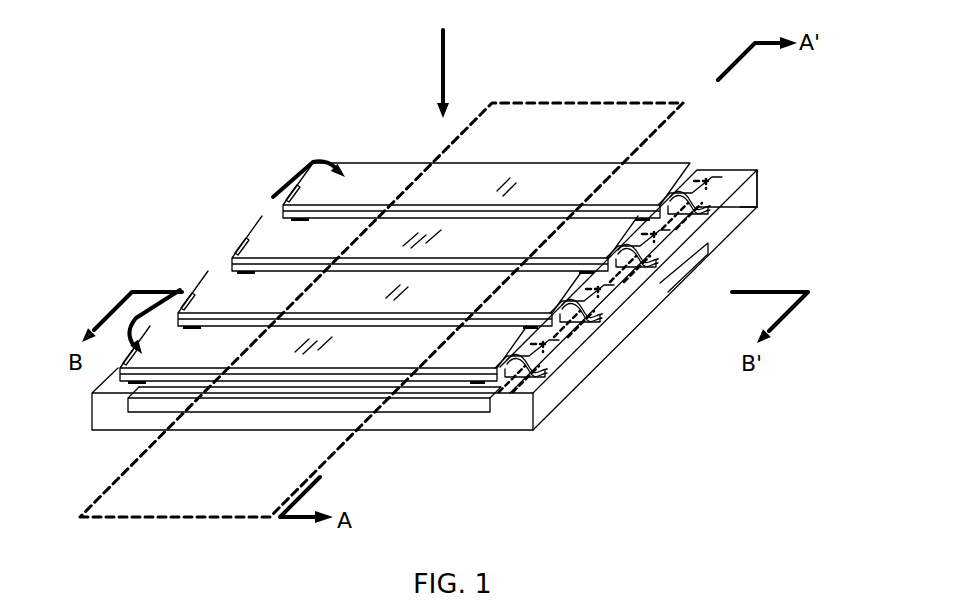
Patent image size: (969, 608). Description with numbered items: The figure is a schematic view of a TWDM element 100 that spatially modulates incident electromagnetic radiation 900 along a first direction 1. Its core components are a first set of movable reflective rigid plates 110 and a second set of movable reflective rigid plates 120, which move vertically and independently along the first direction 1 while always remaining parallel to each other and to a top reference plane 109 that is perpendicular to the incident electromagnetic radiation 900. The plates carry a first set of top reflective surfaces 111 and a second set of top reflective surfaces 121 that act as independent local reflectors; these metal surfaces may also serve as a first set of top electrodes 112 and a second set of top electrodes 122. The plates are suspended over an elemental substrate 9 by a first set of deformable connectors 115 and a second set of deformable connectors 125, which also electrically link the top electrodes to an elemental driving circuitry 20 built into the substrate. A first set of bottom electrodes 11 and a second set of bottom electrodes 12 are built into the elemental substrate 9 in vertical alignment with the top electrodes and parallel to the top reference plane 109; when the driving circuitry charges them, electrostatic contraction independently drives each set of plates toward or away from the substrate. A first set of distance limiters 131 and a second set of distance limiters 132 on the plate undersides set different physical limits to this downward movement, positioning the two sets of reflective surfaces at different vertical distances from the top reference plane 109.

The TWDM element 100 is at (253, 60).
The incident electromagnetic radiation 900 is at (455, 62).
The first direction 1 is at (445, 66).
The top reference plane 109 is at (629, 92).
The elemental substrate 9 is at (540, 425).
The first set of bottom electrodes 11 is at (413, 406).
The first set of distance limiters 131 is at (478, 387).
The second set of bottom electrodes 12 is at (706, 189).
The second set of deformable connectors 125 is at (736, 214).
The first set of deformable connectors 115 is at (705, 273).
The elemental driving circuitry 20 is at (657, 302).
The second set of distance limiters 132 is at (560, 352).
The first set of movable reflective rigid plates 110 is at (206, 296).
The second set of movable reflective rigid plates 120 is at (270, 232).
The first set of top reflective surfaces 111 is at (262, 381).
The first set of top electrodes 112 is at (306, 382).
The second set of top reflective surfaces 121 is at (699, 168).
The second set of top electrodes 122 is at (686, 204).